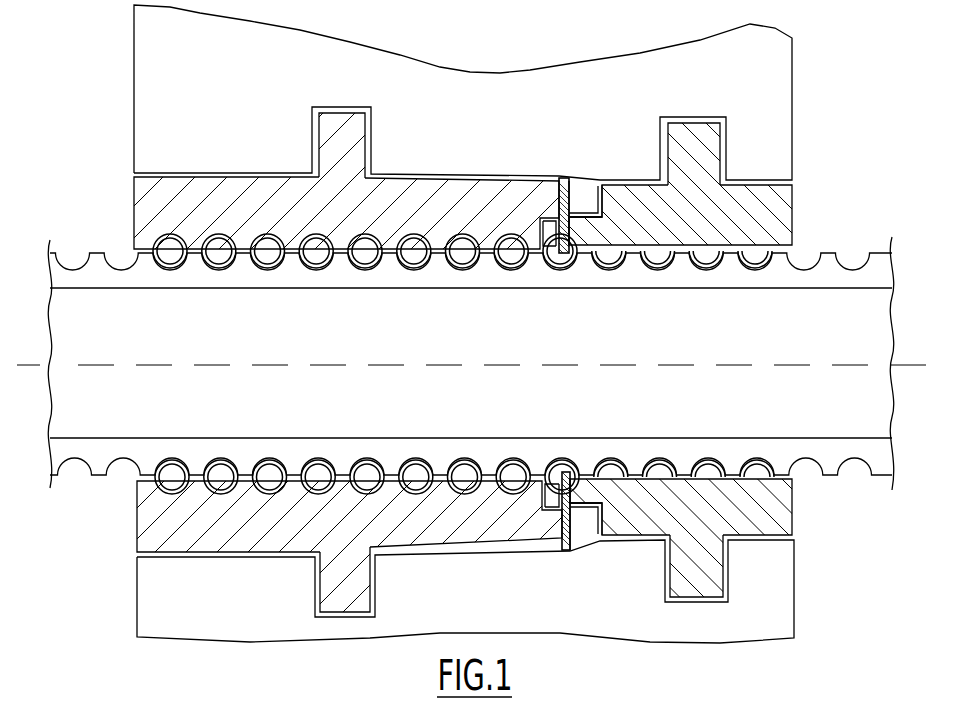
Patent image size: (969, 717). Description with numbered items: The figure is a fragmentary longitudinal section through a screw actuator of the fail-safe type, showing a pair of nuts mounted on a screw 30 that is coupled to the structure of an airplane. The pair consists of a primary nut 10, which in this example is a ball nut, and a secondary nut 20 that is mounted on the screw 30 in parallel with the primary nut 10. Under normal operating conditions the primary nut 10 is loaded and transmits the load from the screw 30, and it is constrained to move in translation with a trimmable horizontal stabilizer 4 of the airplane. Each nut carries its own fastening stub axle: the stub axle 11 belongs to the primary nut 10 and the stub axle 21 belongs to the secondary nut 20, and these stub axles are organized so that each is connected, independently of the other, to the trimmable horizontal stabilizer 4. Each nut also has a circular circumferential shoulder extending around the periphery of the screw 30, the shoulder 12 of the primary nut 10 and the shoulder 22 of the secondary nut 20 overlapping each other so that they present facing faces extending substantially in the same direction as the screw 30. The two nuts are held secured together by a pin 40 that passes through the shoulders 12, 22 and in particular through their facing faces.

The trimmable horizontal stabilizer 4 is at (138, 612).
The primary nut 10 is at (435, 205).
The fastening stub axle 11 is at (333, 146).
The circumferential shoulder 12 is at (586, 192).
The secondary nut 20 is at (740, 207).
The fastening stub axle 21 is at (700, 143).
The circumferential shoulder 22 is at (583, 237).
The screw 30 is at (830, 450).
The pin 40 is at (562, 178).